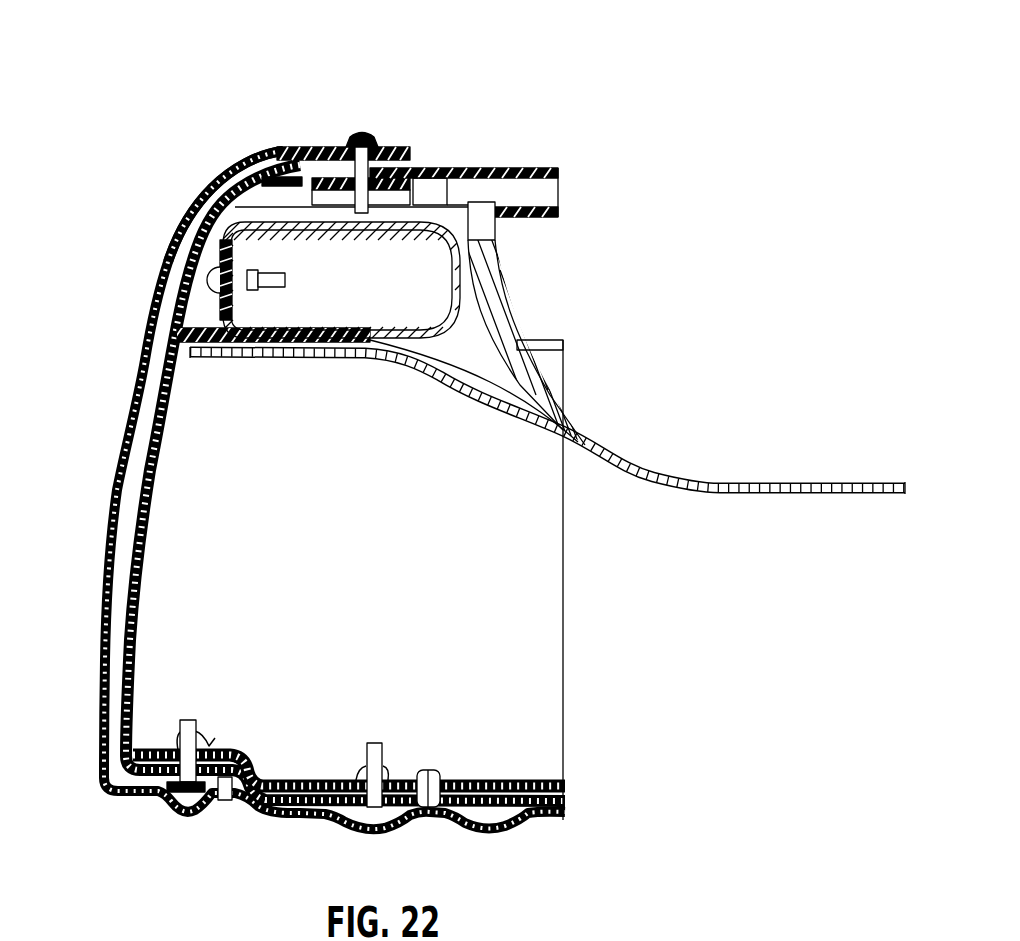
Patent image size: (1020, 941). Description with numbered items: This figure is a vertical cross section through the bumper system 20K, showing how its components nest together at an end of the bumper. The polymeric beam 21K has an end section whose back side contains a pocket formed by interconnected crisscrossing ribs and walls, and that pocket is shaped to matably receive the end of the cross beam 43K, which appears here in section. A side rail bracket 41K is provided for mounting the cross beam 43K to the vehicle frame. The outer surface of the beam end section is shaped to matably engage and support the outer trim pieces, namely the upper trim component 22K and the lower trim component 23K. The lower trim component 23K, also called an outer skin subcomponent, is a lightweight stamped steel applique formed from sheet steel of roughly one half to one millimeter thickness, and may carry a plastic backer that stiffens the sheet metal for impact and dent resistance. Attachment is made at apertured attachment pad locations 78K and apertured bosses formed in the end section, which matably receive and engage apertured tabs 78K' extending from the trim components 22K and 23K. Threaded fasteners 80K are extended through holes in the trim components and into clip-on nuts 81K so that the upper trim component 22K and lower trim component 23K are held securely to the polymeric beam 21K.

The bumper system 20K is at (536, 122).
The polymeric beam 21K is at (182, 449).
The upper trim component 22K is at (233, 148).
The lower trim component 23K is at (142, 311).
The side rail bracket 41K is at (498, 272).
The cross beam 43K is at (307, 327).
The apertured attachment pad location 78K is at (343, 469).
The apertured tab 78K' is at (223, 830).
The threaded fastener 80K is at (366, 130).
The clip-on nut 81K is at (215, 743).